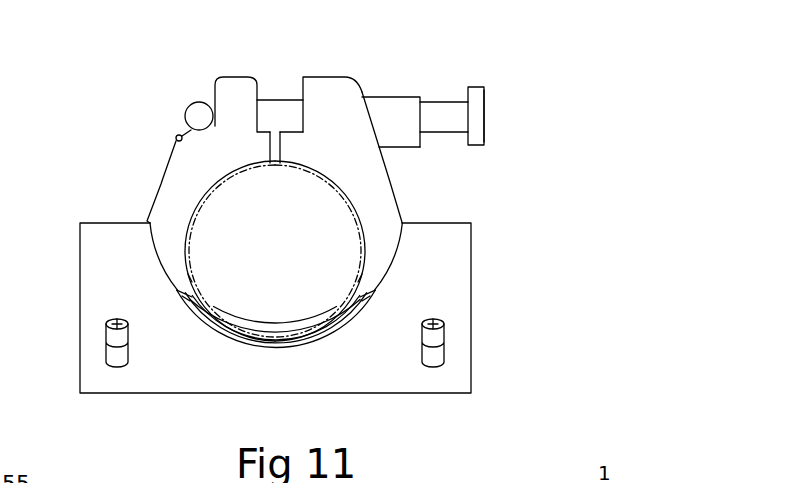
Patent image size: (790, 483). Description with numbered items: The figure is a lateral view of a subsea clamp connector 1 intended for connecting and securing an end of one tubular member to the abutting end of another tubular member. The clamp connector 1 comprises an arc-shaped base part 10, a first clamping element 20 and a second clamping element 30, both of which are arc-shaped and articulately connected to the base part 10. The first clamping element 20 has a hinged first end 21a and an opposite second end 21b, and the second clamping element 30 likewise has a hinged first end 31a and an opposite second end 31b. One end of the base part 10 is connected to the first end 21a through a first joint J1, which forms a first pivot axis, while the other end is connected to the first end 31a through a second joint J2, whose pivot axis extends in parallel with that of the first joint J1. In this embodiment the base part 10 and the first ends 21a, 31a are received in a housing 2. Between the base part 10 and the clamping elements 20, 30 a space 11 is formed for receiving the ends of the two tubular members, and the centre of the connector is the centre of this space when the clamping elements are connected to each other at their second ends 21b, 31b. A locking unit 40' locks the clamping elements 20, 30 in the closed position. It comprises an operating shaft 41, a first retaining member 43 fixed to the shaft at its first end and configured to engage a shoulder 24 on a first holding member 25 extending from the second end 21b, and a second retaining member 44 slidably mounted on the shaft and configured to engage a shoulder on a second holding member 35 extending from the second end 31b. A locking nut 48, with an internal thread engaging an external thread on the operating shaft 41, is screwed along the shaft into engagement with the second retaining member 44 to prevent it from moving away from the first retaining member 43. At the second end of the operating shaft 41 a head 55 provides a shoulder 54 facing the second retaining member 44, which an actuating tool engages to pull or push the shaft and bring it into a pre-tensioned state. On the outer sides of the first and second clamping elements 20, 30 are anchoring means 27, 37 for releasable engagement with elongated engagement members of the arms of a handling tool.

The subsea clamp connector 1 is at (126, 63).
The housing 2 is at (188, 375).
The base part 10 is at (320, 332).
The space 11 is at (273, 303).
The first clamping element 20 is at (192, 187).
The first end of the first clamping element 21a is at (204, 272).
The second end of the first clamping element 21b is at (265, 178).
The shoulder 24 is at (213, 122).
The first holding member 25 is at (232, 84).
The anchoring means 27 is at (162, 183).
The second clamping element 30 is at (376, 189).
The first end of the second clamping element 31a is at (322, 269).
The second end of the second clamping element 31b is at (285, 177).
The second holding member 35 is at (318, 83).
The anchoring means 37 is at (390, 181).
The locking unit 40' is at (445, 111).
The operating shaft 41 is at (273, 107).
The first retaining member 43 is at (197, 113).
The second retaining member 44 is at (397, 137).
The locking nut 48 is at (372, 95).
The shoulder 54 is at (466, 88).
The head 55 is at (482, 103).
The first joint J1 is at (115, 325).
The second joint J2 is at (442, 320).